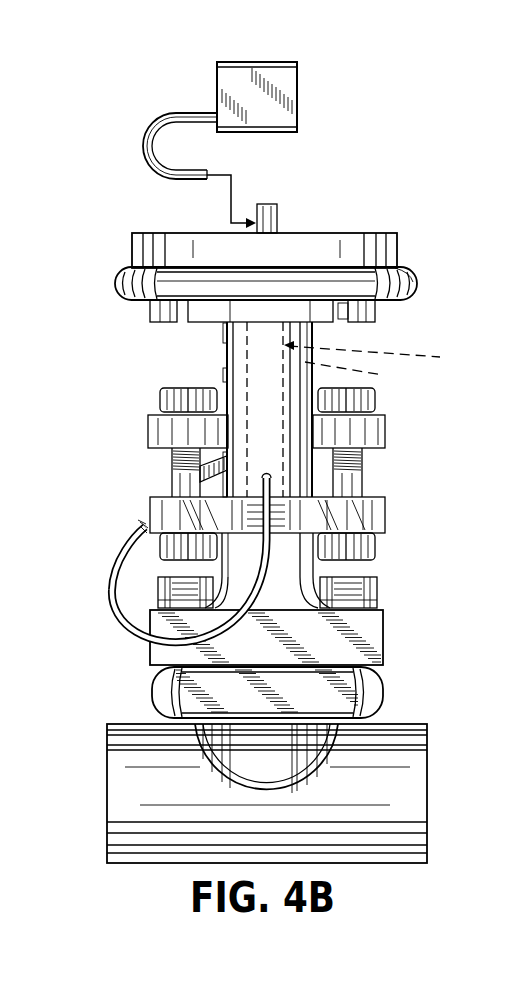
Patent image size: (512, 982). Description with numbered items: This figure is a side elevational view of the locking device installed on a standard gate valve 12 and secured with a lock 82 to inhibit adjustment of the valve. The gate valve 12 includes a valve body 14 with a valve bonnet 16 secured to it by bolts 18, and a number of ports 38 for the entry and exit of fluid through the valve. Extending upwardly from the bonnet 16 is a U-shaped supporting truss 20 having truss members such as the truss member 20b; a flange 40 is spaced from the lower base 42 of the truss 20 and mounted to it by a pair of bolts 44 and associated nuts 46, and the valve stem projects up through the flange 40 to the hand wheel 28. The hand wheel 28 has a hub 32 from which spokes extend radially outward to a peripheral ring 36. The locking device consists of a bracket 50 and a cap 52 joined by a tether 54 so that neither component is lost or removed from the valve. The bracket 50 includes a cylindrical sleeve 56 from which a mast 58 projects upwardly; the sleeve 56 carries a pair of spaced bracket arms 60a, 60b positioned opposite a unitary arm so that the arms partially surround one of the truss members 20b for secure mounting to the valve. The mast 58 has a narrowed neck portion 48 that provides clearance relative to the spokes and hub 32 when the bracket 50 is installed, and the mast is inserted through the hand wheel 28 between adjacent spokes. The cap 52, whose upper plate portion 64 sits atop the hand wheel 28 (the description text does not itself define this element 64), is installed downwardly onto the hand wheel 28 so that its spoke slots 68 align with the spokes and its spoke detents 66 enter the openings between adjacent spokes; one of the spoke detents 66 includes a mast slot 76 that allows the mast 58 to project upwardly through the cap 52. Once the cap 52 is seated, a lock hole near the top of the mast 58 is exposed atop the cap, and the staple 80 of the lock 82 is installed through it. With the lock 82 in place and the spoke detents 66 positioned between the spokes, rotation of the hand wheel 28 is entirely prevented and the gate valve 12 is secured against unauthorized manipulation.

The gate valve 12 is at (452, 550).
The valve body 14 is at (278, 764).
The valve bonnet 16 is at (300, 565).
The bolts 18 is at (158, 585).
The U-shaped supporting truss 20 is at (380, 357).
The truss member 20b is at (371, 374).
The hand wheel 28 is at (108, 284).
The hub 32 is at (352, 322).
The peripheral ring 36 is at (402, 267).
The ports 38 is at (107, 793).
The flange 40 is at (386, 436).
The lower base of the truss 42 is at (172, 517).
The bolts 44 is at (363, 465).
The nuts 46 is at (376, 545).
The narrowed neck portion 48 is at (260, 310).
The bracket 50 is at (218, 433).
The cap 52 is at (420, 213).
The tether 54 is at (116, 572).
The sleeve 56 is at (303, 390).
The mast 58 is at (263, 204).
The bracket arm 60a is at (223, 380).
The bracket arm 60b is at (198, 470).
The top cap plate 64 is at (147, 233).
The spoke detents 66 is at (150, 312).
The spoke slots 68 is at (180, 322).
The mast slot 76 is at (264, 322).
The staple 80 is at (160, 113).
The lock 82 is at (229, 62).